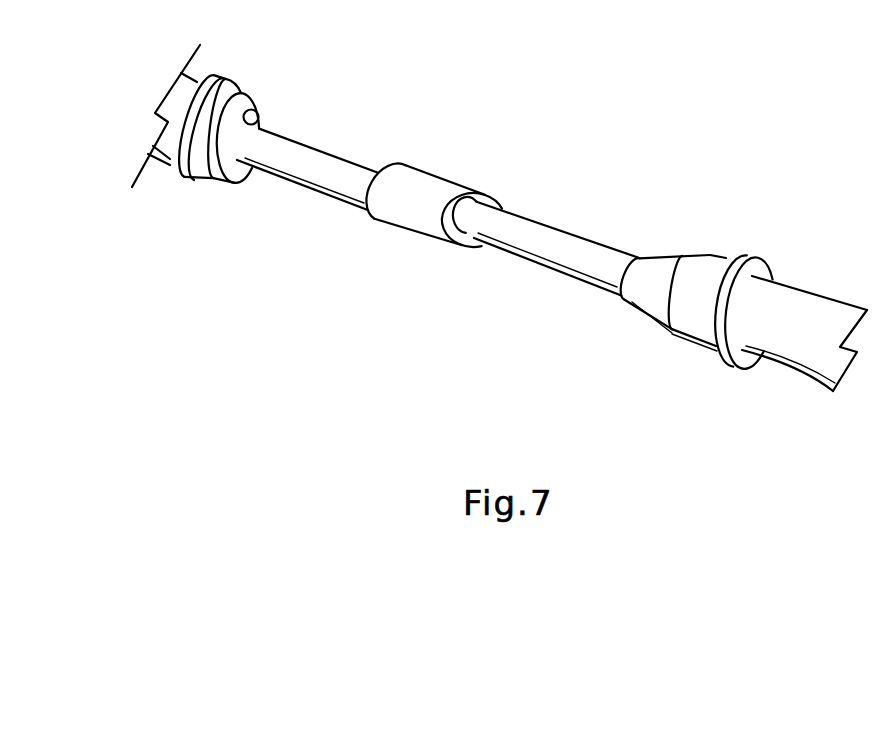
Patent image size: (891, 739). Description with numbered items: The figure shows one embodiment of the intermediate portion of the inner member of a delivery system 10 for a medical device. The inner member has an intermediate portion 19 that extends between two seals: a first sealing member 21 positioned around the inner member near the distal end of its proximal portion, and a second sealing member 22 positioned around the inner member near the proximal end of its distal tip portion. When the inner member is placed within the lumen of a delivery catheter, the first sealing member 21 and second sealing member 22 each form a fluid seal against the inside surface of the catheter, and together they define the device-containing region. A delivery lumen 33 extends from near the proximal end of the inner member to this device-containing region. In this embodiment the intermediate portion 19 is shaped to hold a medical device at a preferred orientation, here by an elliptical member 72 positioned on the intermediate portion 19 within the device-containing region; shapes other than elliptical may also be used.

The drive assembly 10 is at (586, 172).
The intermediate portion 19 is at (308, 193).
The first sealing member 21 is at (182, 190).
The second sealing member 22 is at (732, 377).
The delivery lumen 33 is at (258, 112).
The elliptical member 72 is at (458, 184).